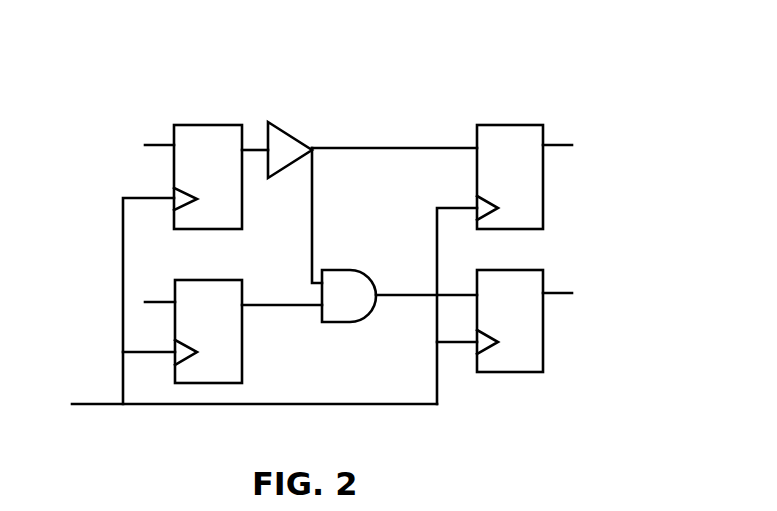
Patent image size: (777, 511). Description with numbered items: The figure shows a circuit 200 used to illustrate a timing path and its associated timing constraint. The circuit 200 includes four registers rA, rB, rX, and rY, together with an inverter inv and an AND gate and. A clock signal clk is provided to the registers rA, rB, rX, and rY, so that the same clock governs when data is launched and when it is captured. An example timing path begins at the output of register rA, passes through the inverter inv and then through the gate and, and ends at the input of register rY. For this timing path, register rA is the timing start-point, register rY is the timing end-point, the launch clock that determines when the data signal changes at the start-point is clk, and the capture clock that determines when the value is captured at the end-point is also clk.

The circuit 200 is at (360, 232).
The inverter inv is at (288, 132).
The AND gate and is at (345, 319).
The clock signal clk is at (92, 405).
The register rA is at (193, 177).
The register rB is at (193, 331).
The register rX is at (524, 177).
The register rY is at (524, 321).